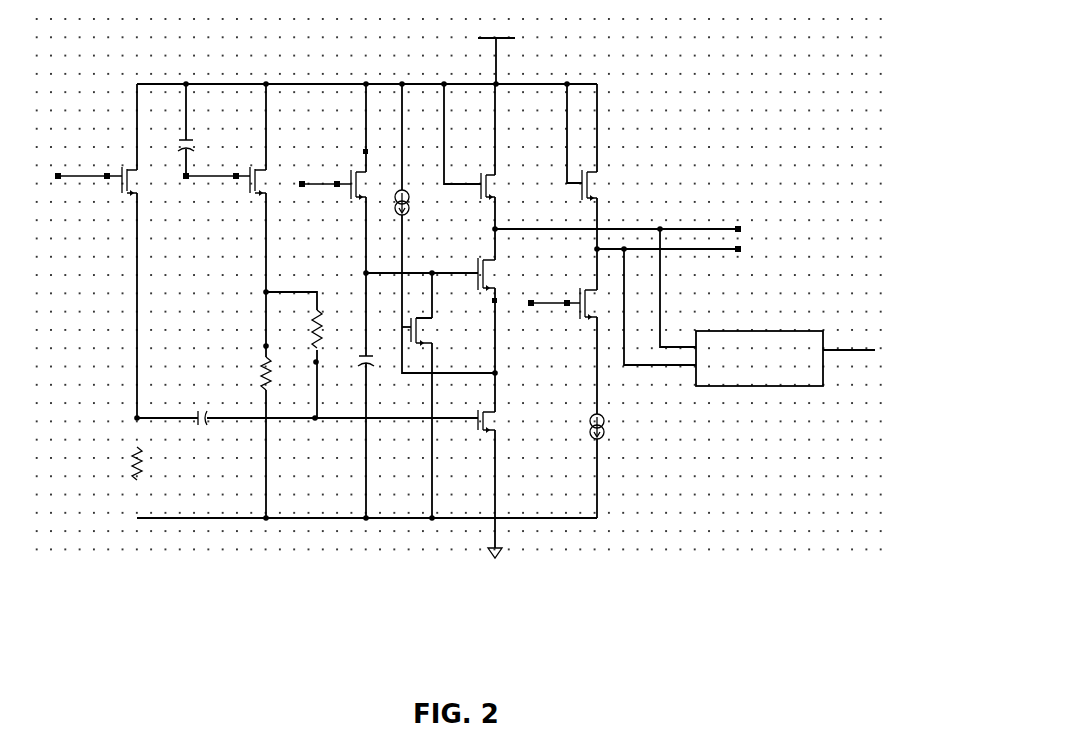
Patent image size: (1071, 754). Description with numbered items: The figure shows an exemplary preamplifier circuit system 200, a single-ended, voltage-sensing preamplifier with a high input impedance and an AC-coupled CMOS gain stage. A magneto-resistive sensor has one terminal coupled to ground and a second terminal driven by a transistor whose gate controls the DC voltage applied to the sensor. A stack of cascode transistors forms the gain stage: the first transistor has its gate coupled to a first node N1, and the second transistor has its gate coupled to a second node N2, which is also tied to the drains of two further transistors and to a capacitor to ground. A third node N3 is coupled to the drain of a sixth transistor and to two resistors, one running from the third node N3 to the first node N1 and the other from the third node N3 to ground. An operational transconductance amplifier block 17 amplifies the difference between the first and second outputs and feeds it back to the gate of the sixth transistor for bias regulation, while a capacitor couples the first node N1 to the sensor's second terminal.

The preamplifier circuit system 200 is at (213, 592).
The first node N1 is at (307, 432).
The second node N2 is at (422, 282).
The third node N3 is at (277, 348).
The operational transconductance amplifier 17 is at (764, 352).